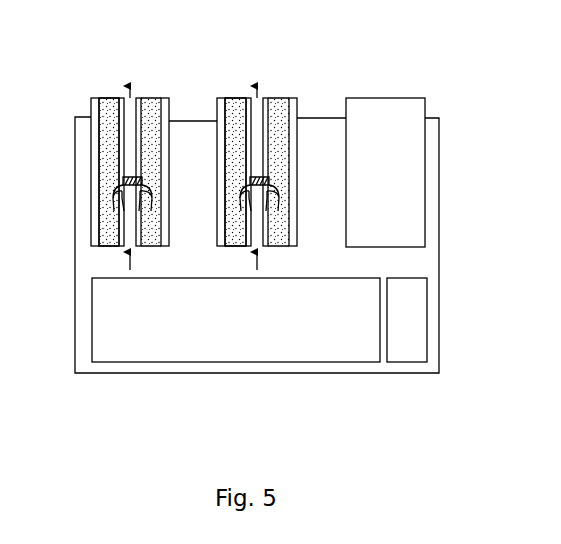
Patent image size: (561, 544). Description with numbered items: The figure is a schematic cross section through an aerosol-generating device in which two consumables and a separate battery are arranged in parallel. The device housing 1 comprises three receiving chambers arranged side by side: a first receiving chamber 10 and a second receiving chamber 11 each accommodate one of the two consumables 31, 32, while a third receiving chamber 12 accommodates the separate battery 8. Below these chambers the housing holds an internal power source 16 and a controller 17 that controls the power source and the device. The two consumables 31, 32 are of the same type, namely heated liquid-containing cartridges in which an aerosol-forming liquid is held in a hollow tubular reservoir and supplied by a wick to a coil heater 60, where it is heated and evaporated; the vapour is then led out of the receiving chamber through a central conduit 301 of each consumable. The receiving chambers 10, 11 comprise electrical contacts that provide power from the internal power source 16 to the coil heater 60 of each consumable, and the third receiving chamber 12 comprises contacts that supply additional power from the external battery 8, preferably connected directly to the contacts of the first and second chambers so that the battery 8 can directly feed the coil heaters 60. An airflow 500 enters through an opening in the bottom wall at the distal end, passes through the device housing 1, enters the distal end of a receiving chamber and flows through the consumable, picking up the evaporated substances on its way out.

The device housing 1 is at (428, 262).
The separate battery 8 is at (367, 130).
The first receiving chamber 10 is at (91, 148).
The second receiving chamber 11 is at (212, 120).
The third receiving chamber 12 is at (343, 118).
The power source 16 is at (167, 340).
The controller 17 is at (403, 340).
The first consumable 31 is at (107, 97).
The second consumable 32 is at (232, 98).
The coil heater 60 is at (122, 180).
The central conduit 301 is at (135, 103).
The airflow 500 is at (84, 378).